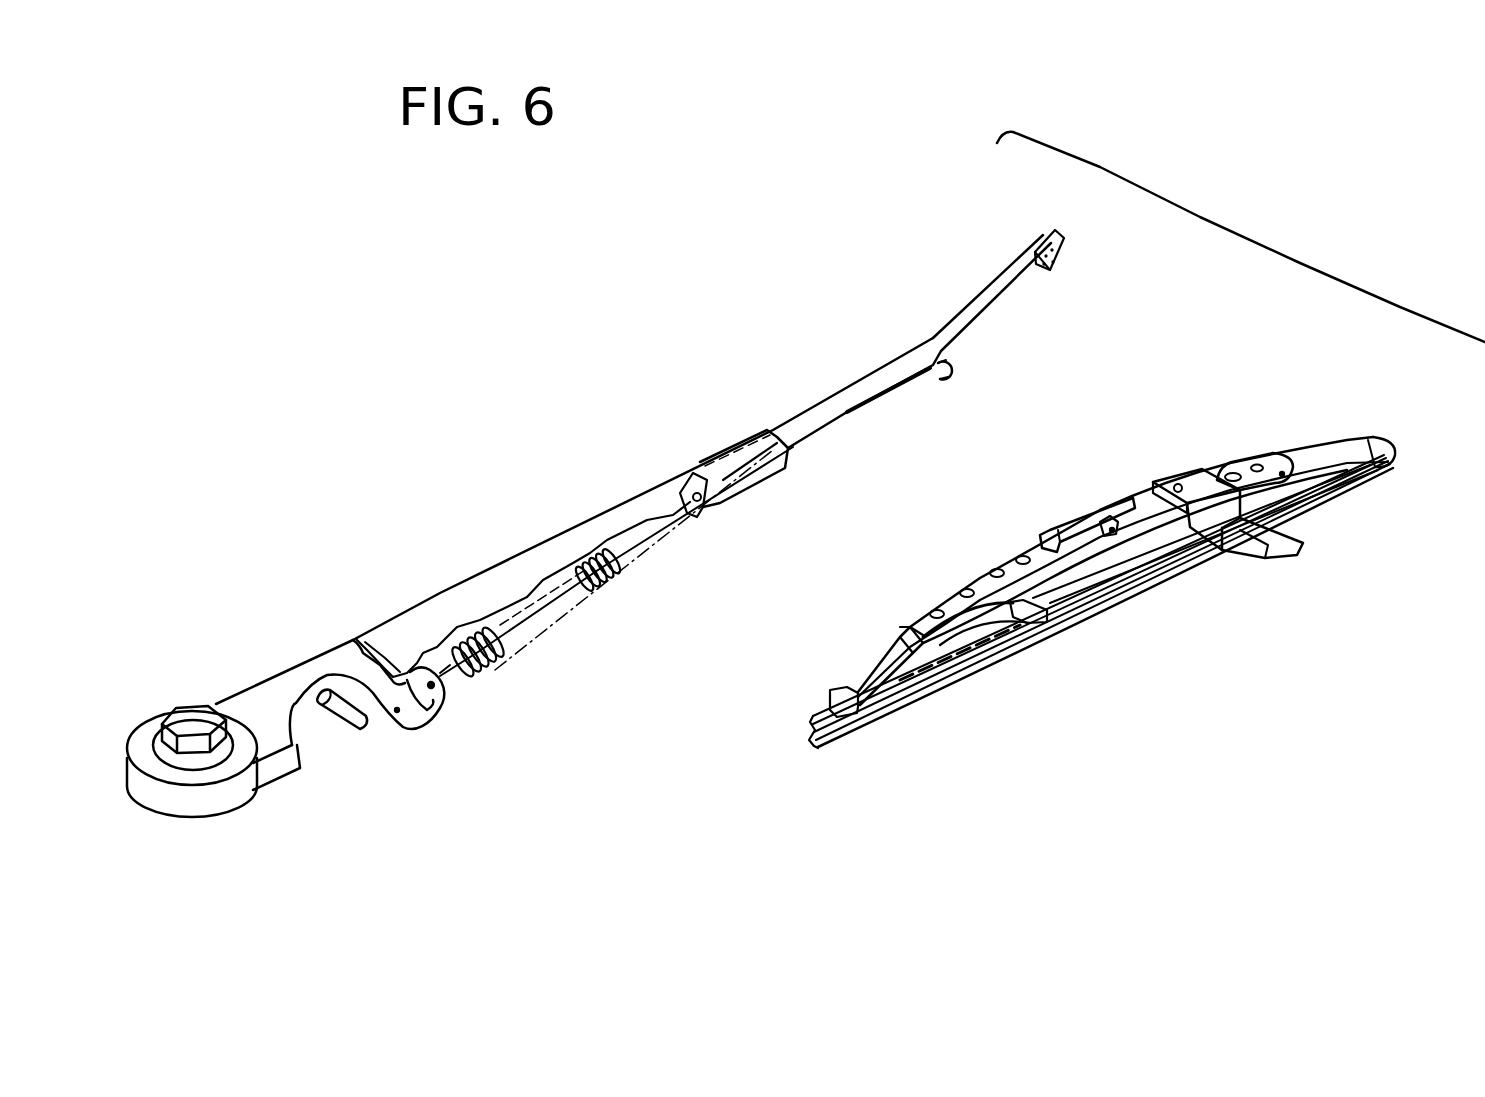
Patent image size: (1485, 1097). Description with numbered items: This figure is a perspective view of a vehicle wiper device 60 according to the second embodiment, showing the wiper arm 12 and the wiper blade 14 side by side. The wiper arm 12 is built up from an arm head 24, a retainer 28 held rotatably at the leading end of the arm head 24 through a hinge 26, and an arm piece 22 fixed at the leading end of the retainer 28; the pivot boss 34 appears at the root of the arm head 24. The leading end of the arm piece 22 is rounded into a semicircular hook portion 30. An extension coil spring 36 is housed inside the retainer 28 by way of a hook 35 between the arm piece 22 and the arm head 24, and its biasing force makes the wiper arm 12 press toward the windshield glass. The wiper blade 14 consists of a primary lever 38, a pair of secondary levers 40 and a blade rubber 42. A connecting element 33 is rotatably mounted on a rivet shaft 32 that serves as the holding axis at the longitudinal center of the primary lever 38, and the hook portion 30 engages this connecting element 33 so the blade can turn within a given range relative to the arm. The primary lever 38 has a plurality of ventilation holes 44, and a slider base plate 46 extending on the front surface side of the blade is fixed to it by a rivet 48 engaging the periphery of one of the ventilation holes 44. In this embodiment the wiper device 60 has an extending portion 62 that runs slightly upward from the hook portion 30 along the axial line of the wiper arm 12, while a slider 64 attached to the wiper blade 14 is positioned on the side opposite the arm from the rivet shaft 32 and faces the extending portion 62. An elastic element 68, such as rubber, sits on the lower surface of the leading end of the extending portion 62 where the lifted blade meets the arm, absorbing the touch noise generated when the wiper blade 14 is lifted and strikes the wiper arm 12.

The wiper arm 12 is at (520, 435).
The wiper blade 14 is at (1110, 463).
The arm piece 22 is at (903, 367).
The arm head 24 is at (277, 693).
The hinge 26 is at (397, 730).
The retainer 28 is at (393, 635).
The hook portion 30 is at (953, 370).
The rivet shaft 32 is at (1112, 500).
The connecting element 33 is at (1090, 510).
The pivot boss with nut 34 is at (195, 722).
The hook 35 is at (357, 747).
The extension coil spring 36 is at (498, 655).
The primary lever 38 is at (1243, 463).
The secondary levers 40 is at (878, 657).
The blade rubber 42 is at (1377, 440).
The ventilation holes 44 is at (1027, 553).
The slider base plate 46 is at (1200, 473).
The rivet 48 is at (1186, 478).
The wiper device 60 is at (723, 350).
The extending portion 62 is at (1000, 280).
The slider 64 is at (1273, 547).
The elastic element 68 is at (1060, 250).